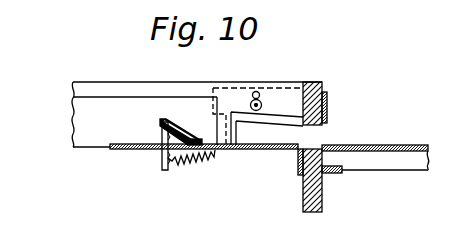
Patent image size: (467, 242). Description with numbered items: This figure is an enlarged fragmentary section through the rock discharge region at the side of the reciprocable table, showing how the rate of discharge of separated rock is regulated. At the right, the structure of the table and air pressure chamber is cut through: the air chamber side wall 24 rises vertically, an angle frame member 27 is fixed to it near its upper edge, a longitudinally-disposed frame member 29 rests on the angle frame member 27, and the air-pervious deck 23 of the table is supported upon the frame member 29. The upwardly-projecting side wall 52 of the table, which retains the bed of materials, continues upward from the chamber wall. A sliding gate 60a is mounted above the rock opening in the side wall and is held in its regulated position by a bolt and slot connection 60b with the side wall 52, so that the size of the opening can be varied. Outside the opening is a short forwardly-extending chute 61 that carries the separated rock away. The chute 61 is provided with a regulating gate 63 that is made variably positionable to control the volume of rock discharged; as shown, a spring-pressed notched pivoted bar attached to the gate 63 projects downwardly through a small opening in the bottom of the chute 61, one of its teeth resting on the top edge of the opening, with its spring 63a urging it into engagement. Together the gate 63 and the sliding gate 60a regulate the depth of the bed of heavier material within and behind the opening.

The chute 61 is at (80, 129).
The side wall 52 is at (248, 62).
The sliding gate 60a is at (388, 110).
The bolt and slot connection 60b is at (262, 96).
The regulating gate 63 is at (180, 121).
The spring 63a is at (161, 153).
The air-pervious deck 23 is at (428, 121).
The side wall 24 is at (308, 192).
The angle frame member 27 is at (330, 176).
The frame member 29 is at (397, 161).